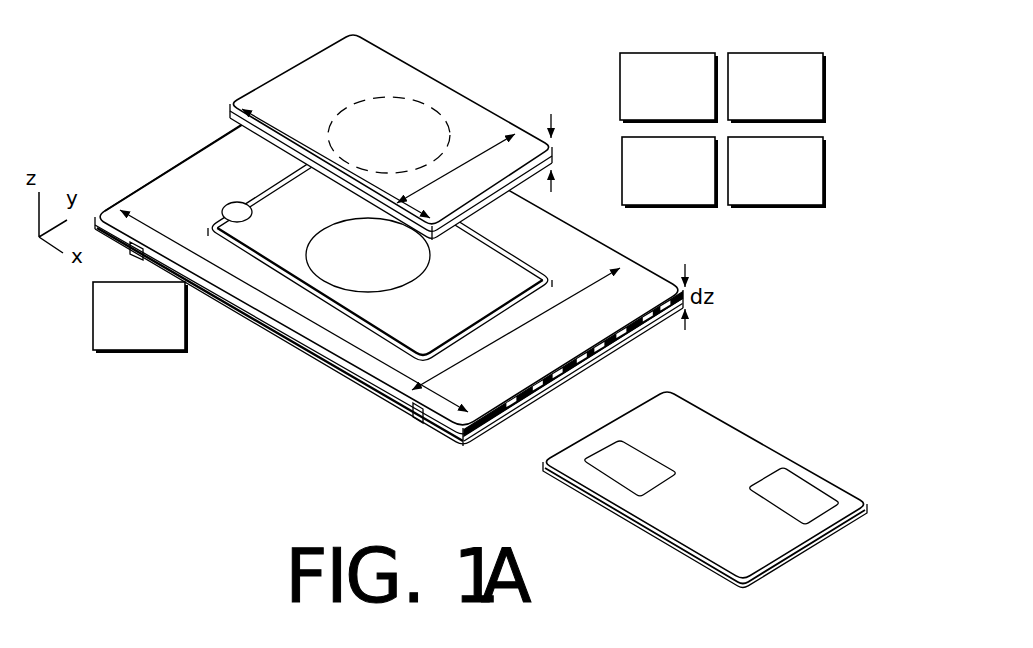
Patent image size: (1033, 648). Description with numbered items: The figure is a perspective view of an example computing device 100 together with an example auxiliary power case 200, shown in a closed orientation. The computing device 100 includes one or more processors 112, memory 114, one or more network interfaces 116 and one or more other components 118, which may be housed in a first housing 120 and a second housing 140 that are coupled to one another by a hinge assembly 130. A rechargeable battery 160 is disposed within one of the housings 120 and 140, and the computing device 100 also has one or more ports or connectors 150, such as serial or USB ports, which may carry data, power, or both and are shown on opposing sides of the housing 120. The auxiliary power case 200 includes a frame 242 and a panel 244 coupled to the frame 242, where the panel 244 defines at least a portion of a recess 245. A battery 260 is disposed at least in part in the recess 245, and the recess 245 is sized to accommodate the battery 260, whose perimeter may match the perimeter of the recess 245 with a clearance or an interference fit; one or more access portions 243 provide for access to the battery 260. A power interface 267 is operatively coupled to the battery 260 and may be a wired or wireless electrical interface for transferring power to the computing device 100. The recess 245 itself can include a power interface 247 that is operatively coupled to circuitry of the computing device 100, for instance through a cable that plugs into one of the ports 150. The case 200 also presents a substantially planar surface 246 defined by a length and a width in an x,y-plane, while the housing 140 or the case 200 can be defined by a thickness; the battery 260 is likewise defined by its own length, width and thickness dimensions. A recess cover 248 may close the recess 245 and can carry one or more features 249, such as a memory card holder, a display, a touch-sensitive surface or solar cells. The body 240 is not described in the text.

The computing device 100 is at (205, 25).
The processors 112 is at (669, 88).
The memory 114 is at (777, 88).
The network interfaces 116 is at (670, 172).
The other components 118 is at (777, 172).
The first housing 120 is at (342, 373).
The hinge assembly 130 is at (417, 418).
The second housing 140 is at (282, 332).
The ports or connectors 150 is at (660, 363).
The battery 160 is at (140, 317).
The auxiliary power case 200 is at (510, 85).
The housing 240 is at (632, 273).
The frame 242 is at (172, 169).
The access portions 243 is at (226, 204).
The panel 244 is at (218, 147).
The recess 245 is at (510, 270).
The surface 246 is at (516, 329).
The power interface 247 is at (410, 272).
The recess cover 248 is at (725, 440).
The features 249 is at (798, 483).
The battery 260 is at (347, 46).
The power interface 267 is at (374, 99).